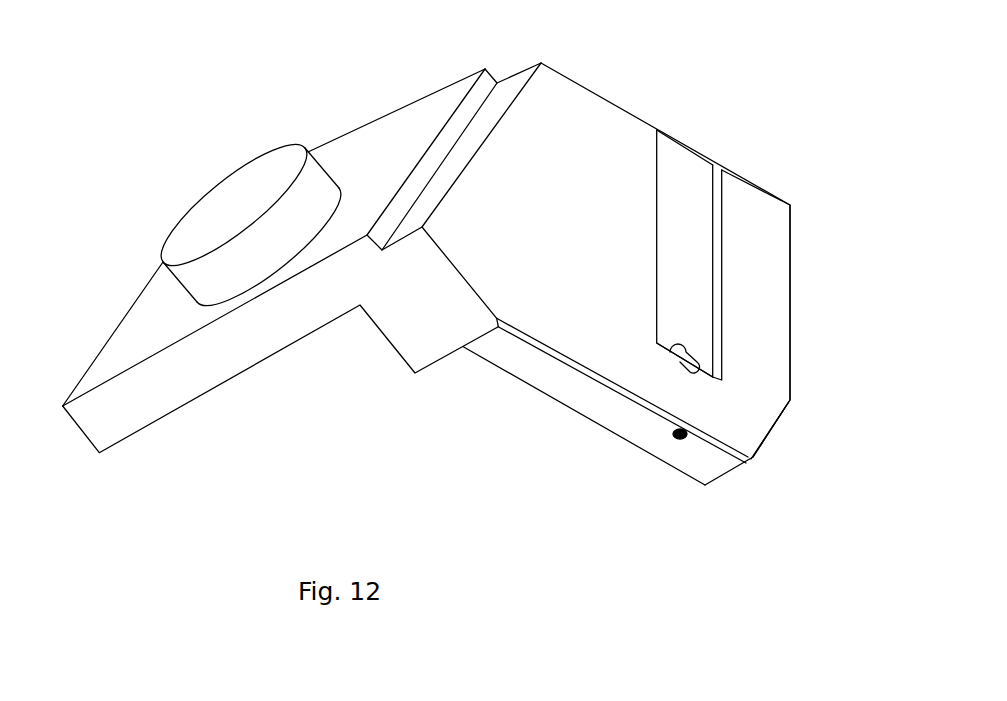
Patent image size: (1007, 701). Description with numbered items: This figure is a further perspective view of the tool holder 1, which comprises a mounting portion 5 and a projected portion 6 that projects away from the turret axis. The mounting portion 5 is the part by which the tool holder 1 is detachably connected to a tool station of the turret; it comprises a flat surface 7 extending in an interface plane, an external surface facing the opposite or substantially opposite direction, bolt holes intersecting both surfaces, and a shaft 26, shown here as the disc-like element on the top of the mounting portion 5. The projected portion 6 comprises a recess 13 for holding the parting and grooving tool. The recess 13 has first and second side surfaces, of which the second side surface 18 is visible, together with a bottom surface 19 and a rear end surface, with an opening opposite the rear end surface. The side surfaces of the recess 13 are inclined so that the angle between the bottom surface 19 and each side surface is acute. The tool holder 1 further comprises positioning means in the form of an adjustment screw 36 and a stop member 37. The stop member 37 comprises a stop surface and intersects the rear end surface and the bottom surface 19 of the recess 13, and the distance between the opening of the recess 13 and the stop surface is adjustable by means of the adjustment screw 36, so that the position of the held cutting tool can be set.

The tool holder 1 is at (155, 83).
The mounting portion 5 is at (212, 355).
The projected portion 6 is at (765, 312).
The flat surface 7 is at (390, 147).
The recess 13 is at (672, 175).
The second side surface 18 is at (718, 192).
The bottom surface 19 is at (685, 253).
The shaft 26 is at (215, 223).
The adjustment screw 36 is at (678, 437).
The stop member 37 is at (688, 365).